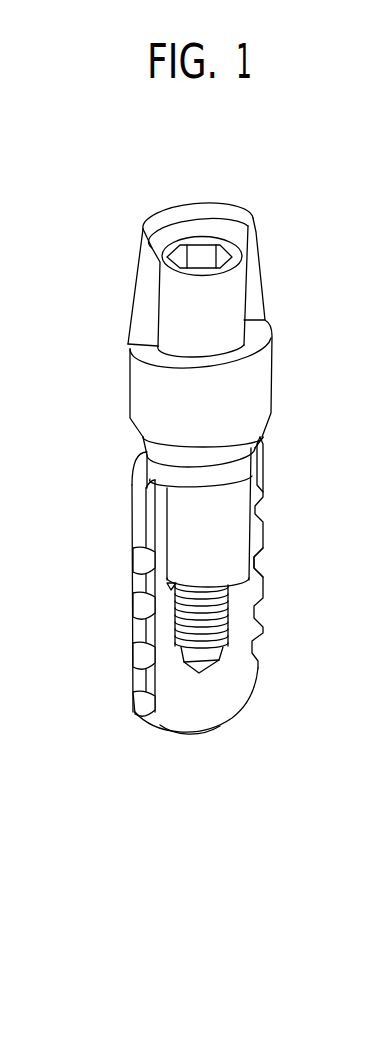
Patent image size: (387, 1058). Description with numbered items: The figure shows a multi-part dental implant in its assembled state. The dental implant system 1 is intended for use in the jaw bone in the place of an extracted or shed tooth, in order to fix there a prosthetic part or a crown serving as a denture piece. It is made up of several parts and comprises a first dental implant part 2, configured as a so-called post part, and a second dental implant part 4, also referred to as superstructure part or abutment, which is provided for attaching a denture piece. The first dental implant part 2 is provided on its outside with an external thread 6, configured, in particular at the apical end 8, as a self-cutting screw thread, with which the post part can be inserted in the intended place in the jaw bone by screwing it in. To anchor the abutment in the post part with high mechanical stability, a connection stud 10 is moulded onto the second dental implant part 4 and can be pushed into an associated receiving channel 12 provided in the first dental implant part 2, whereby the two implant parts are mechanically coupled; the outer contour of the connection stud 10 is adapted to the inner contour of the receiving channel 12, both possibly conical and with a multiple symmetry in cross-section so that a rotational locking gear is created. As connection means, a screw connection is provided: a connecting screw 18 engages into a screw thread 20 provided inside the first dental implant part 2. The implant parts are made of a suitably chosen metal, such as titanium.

The dental implant system 1 is at (76, 426).
The first dental implant part 2 is at (246, 672).
The second dental implant part 4 is at (250, 295).
The external thread 6 is at (263, 573).
The apical end 8 is at (198, 708).
The connection stud 10 is at (228, 533).
The receiving channel 12 is at (170, 583).
The connecting screw 18 is at (202, 317).
The screw thread 20 is at (207, 622).